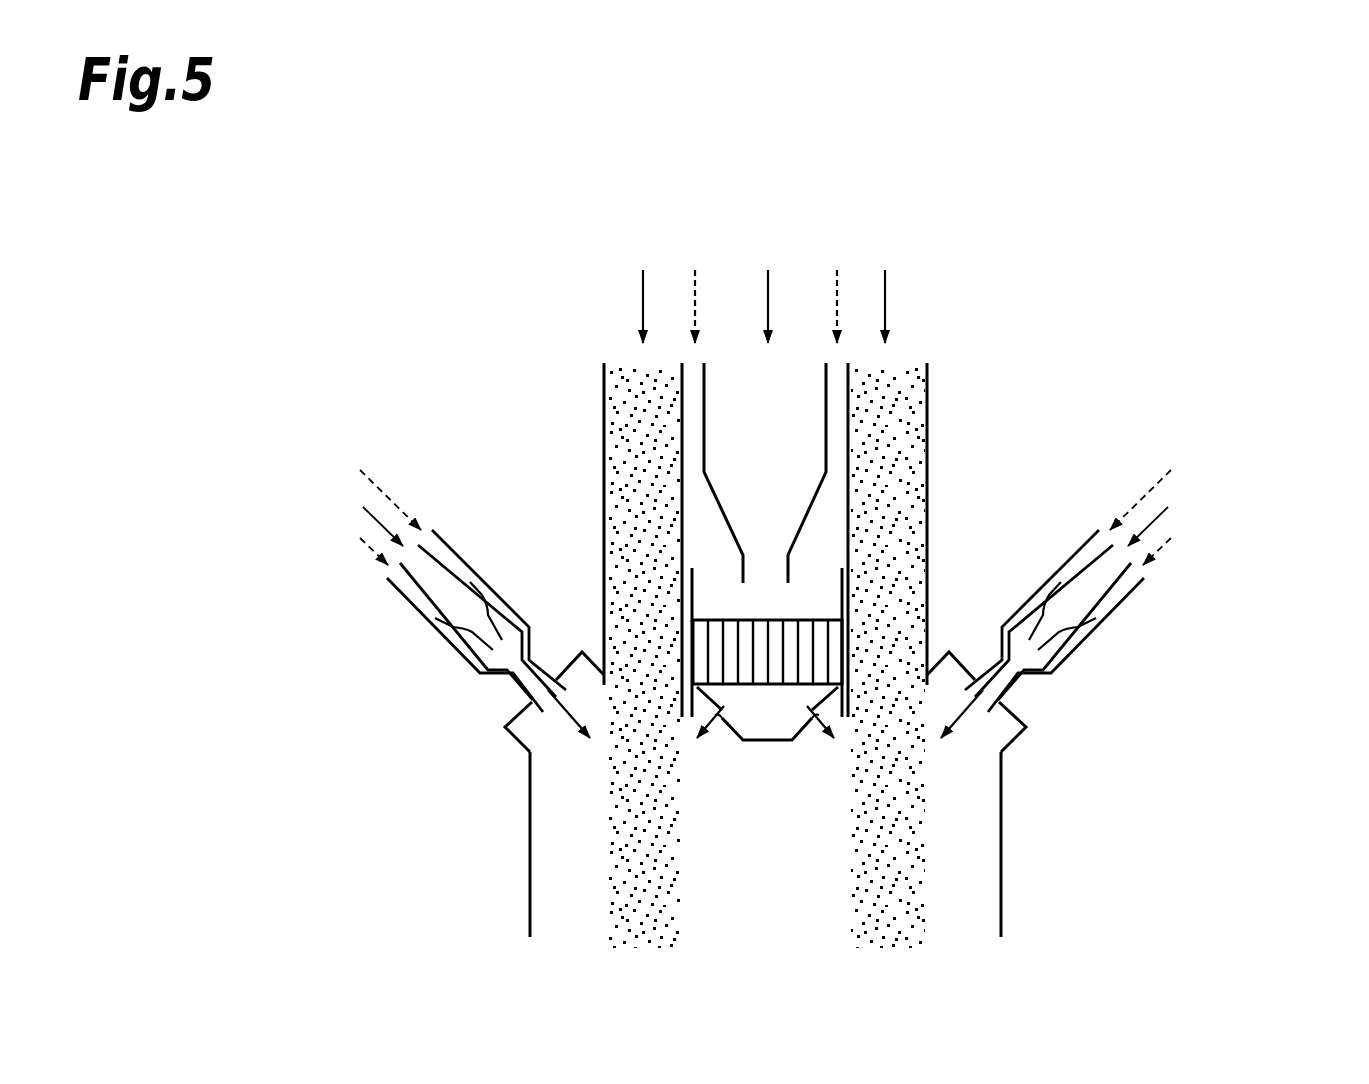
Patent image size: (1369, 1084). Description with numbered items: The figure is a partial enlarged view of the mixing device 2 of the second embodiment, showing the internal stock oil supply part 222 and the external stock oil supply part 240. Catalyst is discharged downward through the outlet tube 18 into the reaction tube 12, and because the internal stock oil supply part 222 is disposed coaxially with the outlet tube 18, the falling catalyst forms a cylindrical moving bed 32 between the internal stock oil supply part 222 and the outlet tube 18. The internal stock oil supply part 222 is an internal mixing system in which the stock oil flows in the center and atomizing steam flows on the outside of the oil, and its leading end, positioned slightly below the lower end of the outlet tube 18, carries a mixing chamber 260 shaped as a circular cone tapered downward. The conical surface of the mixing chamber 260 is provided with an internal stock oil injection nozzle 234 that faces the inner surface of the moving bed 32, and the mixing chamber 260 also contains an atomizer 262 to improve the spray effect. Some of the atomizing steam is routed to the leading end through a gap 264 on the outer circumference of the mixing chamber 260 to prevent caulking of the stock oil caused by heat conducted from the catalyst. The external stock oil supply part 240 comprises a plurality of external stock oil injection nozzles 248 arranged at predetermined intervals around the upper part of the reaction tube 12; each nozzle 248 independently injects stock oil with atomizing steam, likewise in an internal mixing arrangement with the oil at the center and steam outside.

The mixing device 2 is at (962, 206).
The reaction tube 12 is at (1003, 825).
The outlet tube 18 is at (928, 398).
The moving bed 32 is at (630, 895).
The internal stock oil supply part 222 is at (855, 477).
The internal stock oil injection nozzle 234 is at (722, 720).
The external stock oil supply part 240 is at (500, 724).
The external stock oil injection nozzle 248 is at (407, 603).
The mixing chamber 260 is at (843, 577).
The atomizer 262 is at (712, 620).
The gap 264 is at (690, 640).